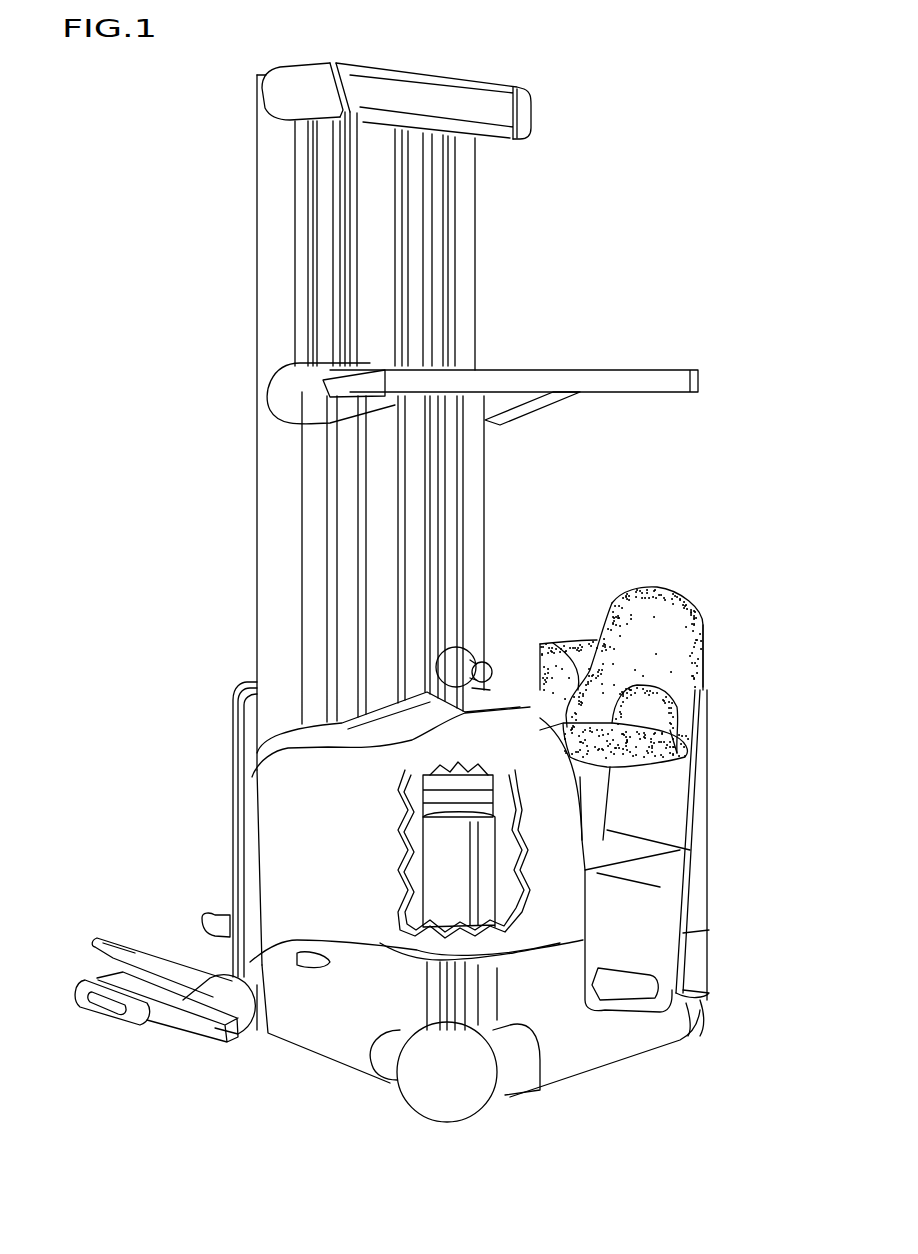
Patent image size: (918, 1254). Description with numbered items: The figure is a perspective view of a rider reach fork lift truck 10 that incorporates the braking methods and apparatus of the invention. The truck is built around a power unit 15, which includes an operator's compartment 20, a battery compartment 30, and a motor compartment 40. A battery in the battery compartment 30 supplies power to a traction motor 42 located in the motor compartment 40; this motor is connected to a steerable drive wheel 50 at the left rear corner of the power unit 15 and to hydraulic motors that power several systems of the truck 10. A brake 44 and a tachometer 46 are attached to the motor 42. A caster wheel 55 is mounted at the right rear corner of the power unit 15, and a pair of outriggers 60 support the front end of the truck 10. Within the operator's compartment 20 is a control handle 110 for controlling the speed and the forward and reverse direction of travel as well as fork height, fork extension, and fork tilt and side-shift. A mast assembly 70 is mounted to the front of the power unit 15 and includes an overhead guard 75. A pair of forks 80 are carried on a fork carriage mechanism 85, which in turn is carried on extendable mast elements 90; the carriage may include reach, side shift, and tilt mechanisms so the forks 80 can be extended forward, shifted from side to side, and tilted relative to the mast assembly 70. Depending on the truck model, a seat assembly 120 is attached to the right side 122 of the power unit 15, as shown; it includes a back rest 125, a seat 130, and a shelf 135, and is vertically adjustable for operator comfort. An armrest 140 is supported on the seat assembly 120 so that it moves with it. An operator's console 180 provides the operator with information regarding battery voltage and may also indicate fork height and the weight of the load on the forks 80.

The rider reach fork lift truck 10 is at (212, 791).
The power unit 15 is at (622, 1066).
The operator's compartment 20 is at (638, 819).
The battery compartment 30 is at (332, 910).
The motor compartment 40 is at (386, 778).
The traction motor 42 is at (485, 880).
The brake 44 is at (428, 800).
The tachometer 46 is at (524, 736).
The steerable drive wheel 50 is at (460, 1093).
The caster wheel 55 is at (702, 1013).
The outriggers 60 is at (137, 1023).
The mast assembly 70 is at (247, 516).
The overhead guard 75 is at (698, 380).
The forks 80 is at (203, 917).
The fork carriage mechanism 85 is at (230, 708).
The extendable mast elements 90 is at (476, 243).
The control handle 110 is at (465, 650).
The seat assembly 120 is at (690, 588).
The right side 122 is at (710, 808).
The back rest 125 is at (706, 634).
The seat 130 is at (660, 768).
The shelf 135 is at (652, 707).
The armrest 140 is at (554, 643).
The operator's console 180 is at (462, 713).